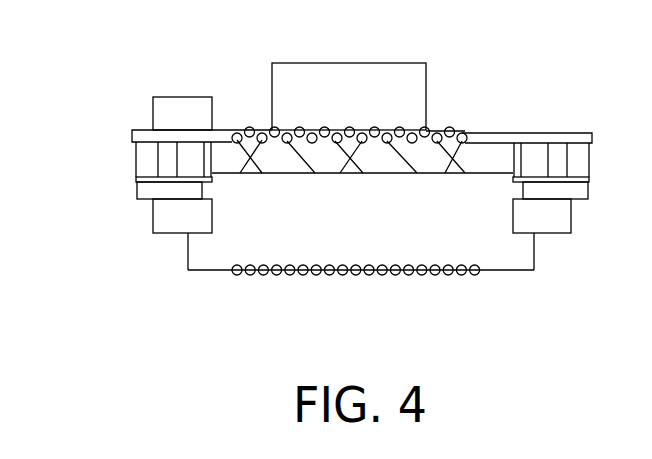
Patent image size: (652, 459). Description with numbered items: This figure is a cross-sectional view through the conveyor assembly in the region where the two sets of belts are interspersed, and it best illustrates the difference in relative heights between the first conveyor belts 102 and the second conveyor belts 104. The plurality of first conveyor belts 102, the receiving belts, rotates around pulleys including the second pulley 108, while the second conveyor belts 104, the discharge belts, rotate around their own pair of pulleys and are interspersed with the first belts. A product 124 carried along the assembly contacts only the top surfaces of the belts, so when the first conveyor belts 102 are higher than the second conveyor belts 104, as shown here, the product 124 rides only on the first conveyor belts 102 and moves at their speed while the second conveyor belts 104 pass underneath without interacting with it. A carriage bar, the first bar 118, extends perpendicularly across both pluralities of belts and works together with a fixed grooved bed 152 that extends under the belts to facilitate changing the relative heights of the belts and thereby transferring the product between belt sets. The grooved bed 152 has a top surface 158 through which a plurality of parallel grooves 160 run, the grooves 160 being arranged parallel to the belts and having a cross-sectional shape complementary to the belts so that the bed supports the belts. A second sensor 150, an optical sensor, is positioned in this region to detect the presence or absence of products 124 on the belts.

The first conveyor belt 102 is at (325, 143).
The second conveyor belt 104 is at (232, 140).
The second pulley 108 is at (206, 254).
The first bar 118 is at (558, 133).
The product 124 is at (355, 83).
The second sensor 150 is at (190, 112).
The grooved bed 152 is at (482, 158).
The top surface 158 is at (223, 150).
The parallel grooves 160 is at (340, 173).